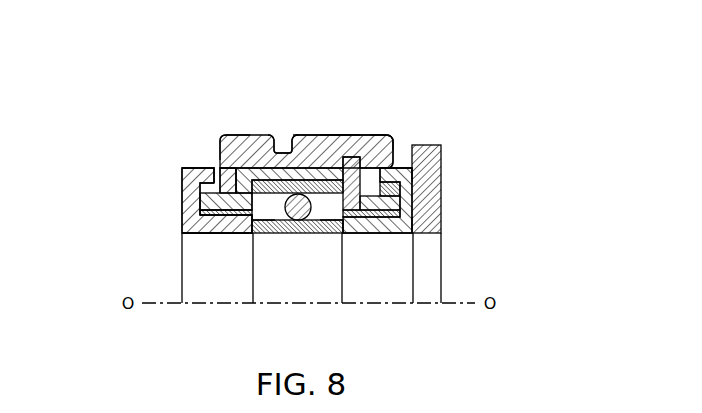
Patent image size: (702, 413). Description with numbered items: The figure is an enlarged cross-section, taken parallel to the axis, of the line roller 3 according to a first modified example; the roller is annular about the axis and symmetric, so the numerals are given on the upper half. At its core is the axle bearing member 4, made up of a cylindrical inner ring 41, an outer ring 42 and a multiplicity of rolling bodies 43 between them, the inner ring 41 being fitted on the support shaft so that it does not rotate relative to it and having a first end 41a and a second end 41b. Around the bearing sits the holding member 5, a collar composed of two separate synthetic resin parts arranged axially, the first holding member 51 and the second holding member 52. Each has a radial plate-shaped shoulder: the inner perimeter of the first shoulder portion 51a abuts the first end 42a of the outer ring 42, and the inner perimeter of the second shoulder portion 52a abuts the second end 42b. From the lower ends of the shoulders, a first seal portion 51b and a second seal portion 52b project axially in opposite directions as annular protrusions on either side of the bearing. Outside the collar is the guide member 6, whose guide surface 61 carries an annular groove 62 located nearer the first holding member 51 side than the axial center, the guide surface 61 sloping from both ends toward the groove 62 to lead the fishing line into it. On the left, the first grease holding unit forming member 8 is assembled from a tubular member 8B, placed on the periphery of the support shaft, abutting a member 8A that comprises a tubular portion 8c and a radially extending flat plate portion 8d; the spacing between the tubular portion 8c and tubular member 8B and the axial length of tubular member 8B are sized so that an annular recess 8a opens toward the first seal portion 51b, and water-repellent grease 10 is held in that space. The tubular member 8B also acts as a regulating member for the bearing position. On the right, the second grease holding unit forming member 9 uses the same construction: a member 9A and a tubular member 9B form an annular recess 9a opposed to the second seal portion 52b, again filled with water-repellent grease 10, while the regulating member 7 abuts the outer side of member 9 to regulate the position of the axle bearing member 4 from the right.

The line roller 3 is at (404, 64).
The axle bearing member 4 is at (290, 272).
The inner ring 41 is at (318, 235).
The first end of inner ring 41a is at (250, 233).
The second end of inner ring 41b is at (333, 233).
The outer ring 42 is at (270, 233).
The first end of outer ring 42a is at (240, 140).
The second end of outer ring 42b is at (337, 138).
The rolling bodies 43 is at (300, 220).
The holding member 5 is at (398, 168).
The guide member 6 is at (385, 141).
The regulating member 7 is at (432, 144).
The first grease holding unit forming member 8 is at (90, 166).
The member 8A is at (134, 153).
The tubular member 8B is at (225, 231).
The annular recess 8a is at (197, 226).
The tubular portion 8c is at (182, 167).
The flat plate portion 8d is at (182, 194).
The second grease holding unit forming member 9 is at (518, 160).
The member 9A is at (405, 184).
The tubular member 9B is at (415, 232).
The annular recess 9a is at (410, 228).
The water-repellent grease 10 is at (200, 211).
The first holding member 51 is at (266, 160).
The first shoulder portion 51a is at (222, 160).
The first seal portion 51b is at (205, 206).
The second holding member 52 is at (307, 138).
The second shoulder portion 52a is at (351, 157).
The second seal portion 52b is at (402, 186).
The guide surface 61 is at (318, 138).
The annular groove 62 is at (285, 150).